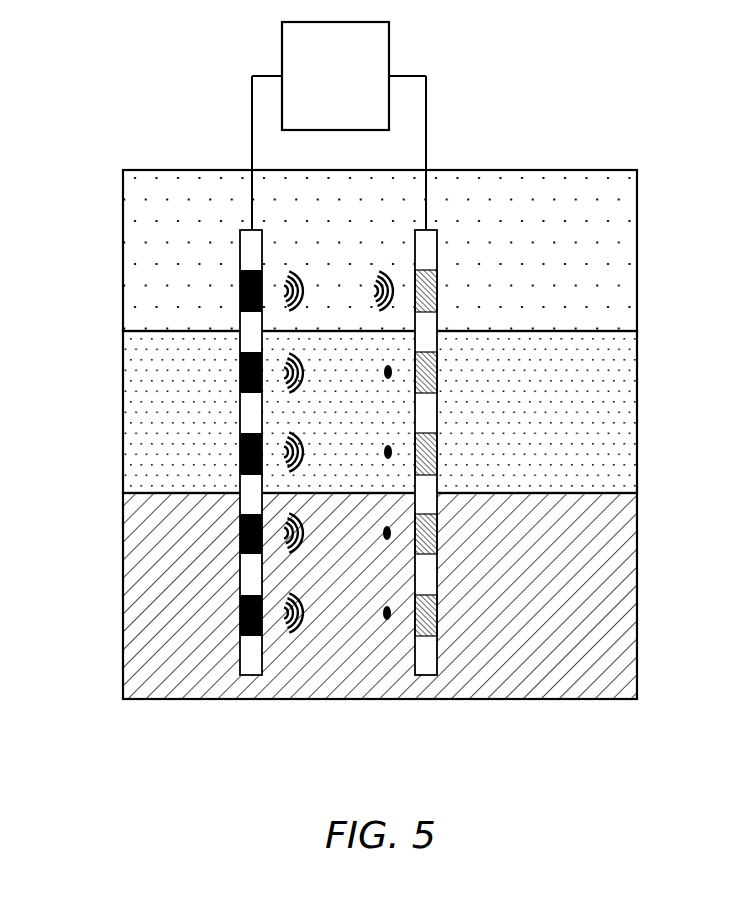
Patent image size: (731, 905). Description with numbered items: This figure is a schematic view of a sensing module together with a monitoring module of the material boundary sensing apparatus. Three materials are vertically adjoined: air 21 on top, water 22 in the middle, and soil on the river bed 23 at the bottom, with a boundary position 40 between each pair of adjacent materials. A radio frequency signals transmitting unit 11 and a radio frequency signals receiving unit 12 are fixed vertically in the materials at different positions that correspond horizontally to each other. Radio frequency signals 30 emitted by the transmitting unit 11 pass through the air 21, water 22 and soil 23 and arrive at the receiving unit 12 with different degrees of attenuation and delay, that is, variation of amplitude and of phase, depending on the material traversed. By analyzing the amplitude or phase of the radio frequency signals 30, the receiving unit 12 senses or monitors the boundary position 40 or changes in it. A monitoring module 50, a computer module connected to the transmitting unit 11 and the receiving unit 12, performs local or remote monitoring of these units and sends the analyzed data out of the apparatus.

The radio frequency signals transmitting unit 11 is at (240, 290).
The radio frequency signals receiving unit 12 is at (438, 274).
The material (air) 21 is at (608, 196).
The material (water) 22 is at (610, 395).
The material (soil on river bed) 23 is at (608, 632).
The radio frequency signals 30 is at (387, 620).
The boundary position 40 is at (597, 331).
The monitoring module 50 is at (352, 90).